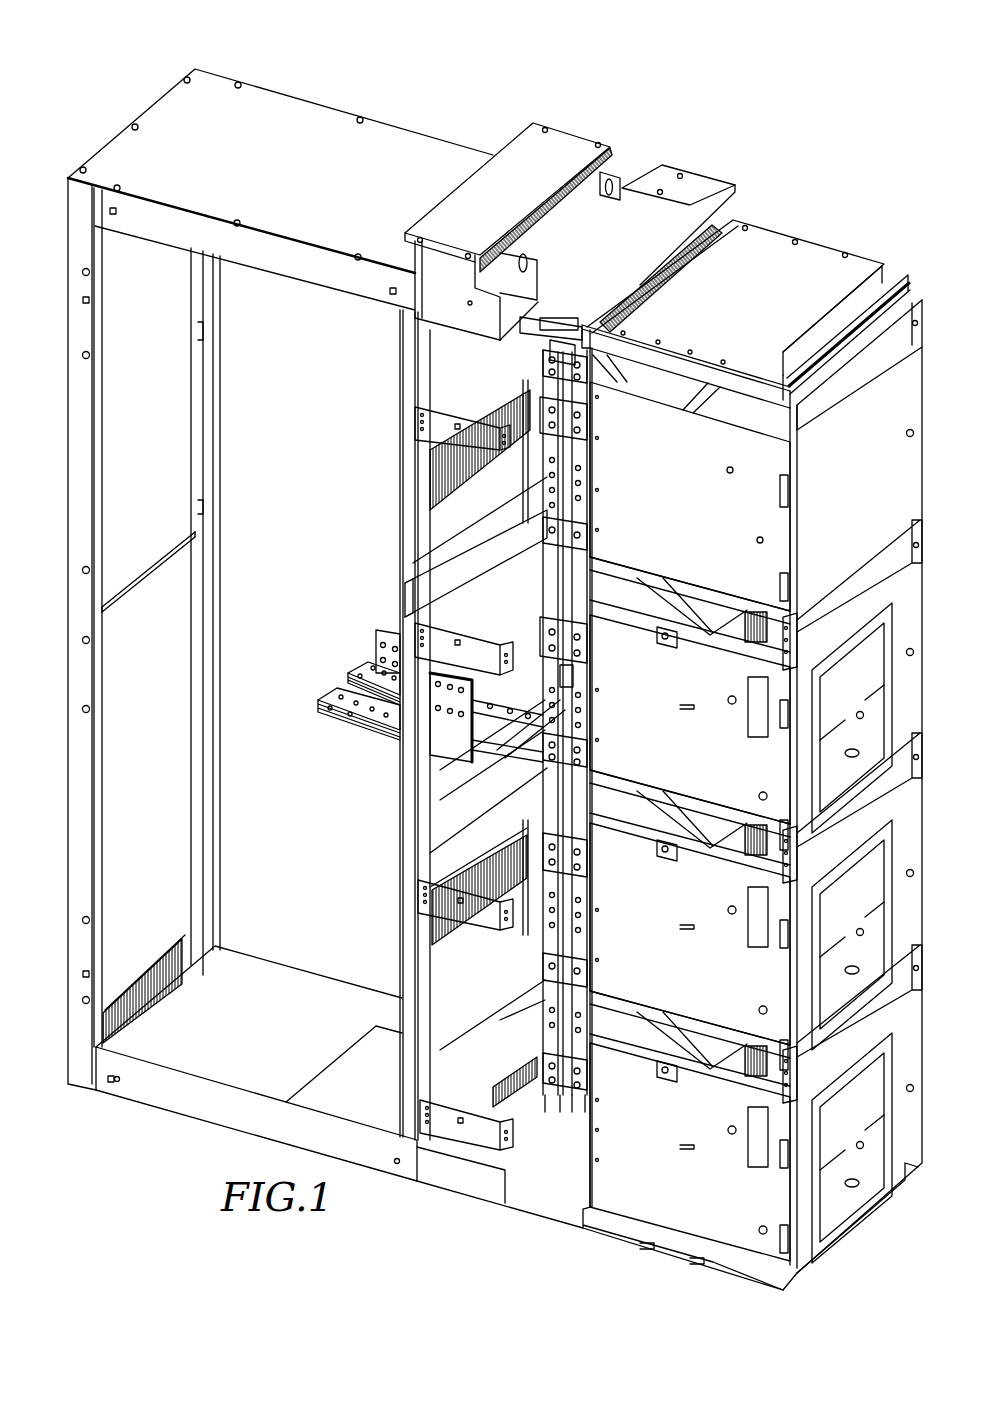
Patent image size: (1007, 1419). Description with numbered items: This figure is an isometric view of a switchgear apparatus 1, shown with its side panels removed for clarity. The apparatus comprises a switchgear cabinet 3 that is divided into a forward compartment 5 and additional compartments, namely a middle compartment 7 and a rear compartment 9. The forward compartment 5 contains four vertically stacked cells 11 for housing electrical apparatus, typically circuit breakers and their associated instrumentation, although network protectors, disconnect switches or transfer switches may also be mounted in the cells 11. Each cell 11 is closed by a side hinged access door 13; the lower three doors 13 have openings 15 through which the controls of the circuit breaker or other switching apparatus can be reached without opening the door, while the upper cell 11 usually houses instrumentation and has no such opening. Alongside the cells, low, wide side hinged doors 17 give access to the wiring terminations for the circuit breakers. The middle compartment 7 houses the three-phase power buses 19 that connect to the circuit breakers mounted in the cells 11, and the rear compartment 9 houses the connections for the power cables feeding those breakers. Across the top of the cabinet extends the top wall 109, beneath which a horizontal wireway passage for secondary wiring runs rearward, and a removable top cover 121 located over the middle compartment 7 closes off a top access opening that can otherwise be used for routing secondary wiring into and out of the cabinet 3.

The switchgear apparatus 1 is at (516, 85).
The switchgear cabinet 3 is at (640, 128).
The forward compartment 5 is at (818, 225).
The middle compartment 7 is at (440, 1010).
The rear compartment 9 is at (184, 1049).
The cells 11 is at (738, 457).
The access door 13 is at (798, 527).
The openings 15 is at (878, 645).
The side hinged doors 17 is at (895, 347).
The three-phase power buses 19 is at (390, 565).
The top wall 109 is at (853, 268).
The removable top cover 121 is at (668, 185).